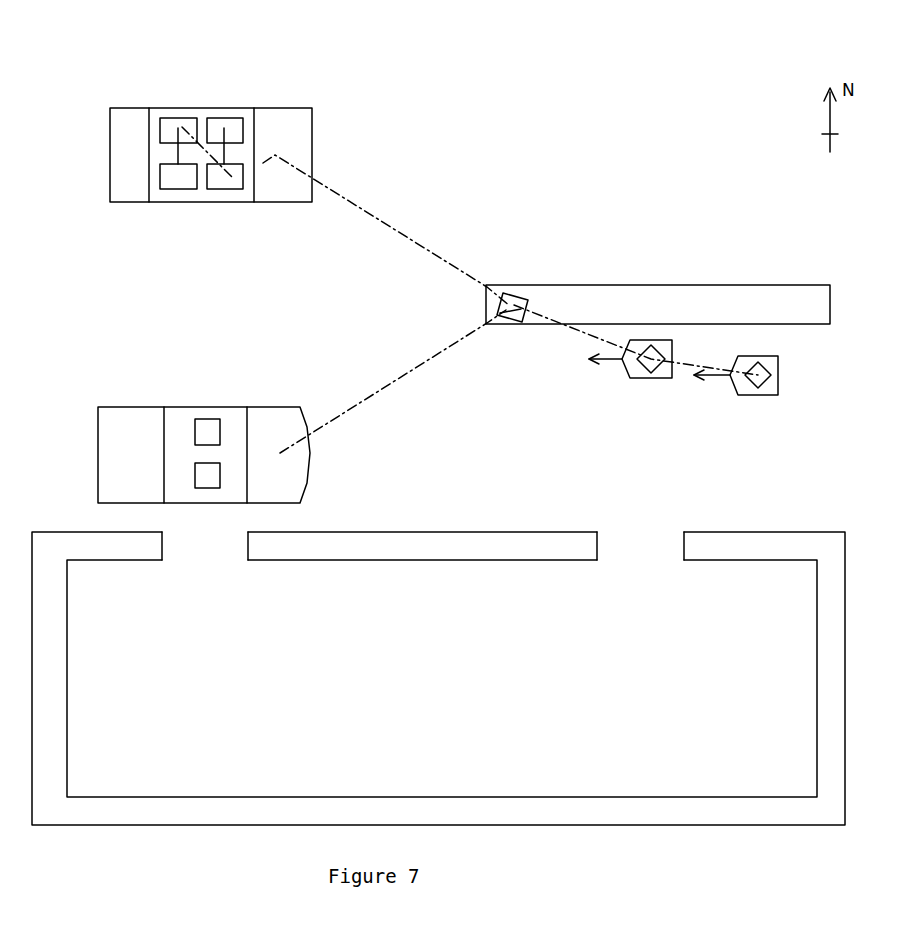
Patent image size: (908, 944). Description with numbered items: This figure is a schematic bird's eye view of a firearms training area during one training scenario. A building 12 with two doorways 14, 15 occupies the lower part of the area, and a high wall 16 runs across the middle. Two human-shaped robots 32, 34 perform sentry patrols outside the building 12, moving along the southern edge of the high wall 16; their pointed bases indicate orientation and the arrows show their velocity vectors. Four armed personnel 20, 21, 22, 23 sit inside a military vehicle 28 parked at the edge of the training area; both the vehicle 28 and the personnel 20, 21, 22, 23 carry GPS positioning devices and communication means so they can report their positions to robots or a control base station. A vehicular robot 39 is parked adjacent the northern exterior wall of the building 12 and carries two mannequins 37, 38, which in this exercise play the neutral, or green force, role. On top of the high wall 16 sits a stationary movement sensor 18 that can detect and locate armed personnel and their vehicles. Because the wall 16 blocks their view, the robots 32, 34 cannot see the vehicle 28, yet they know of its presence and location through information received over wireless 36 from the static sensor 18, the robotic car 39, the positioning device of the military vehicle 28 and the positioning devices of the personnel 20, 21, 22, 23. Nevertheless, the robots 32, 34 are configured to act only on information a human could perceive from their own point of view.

The building 12 is at (845, 672).
The doorway 14 is at (205, 546).
The doorway 15 is at (640, 546).
The high wall 16 is at (658, 285).
The stationary movement sensor 18 is at (512, 291).
The armed personnel 20 is at (178, 118).
The armed personnel 21 is at (224, 118).
The armed personnel 22 is at (178, 202).
The armed personnel 23 is at (224, 202).
The military vehicle 28 is at (312, 155).
The human-shaped robot 32 is at (652, 380).
The human-shaped robot 34 is at (760, 397).
The wireless 36 is at (226, 148).
The mannequin 37 is at (207, 488).
The mannequin 38 is at (207, 419).
The vehicular robot 39 is at (98, 464).